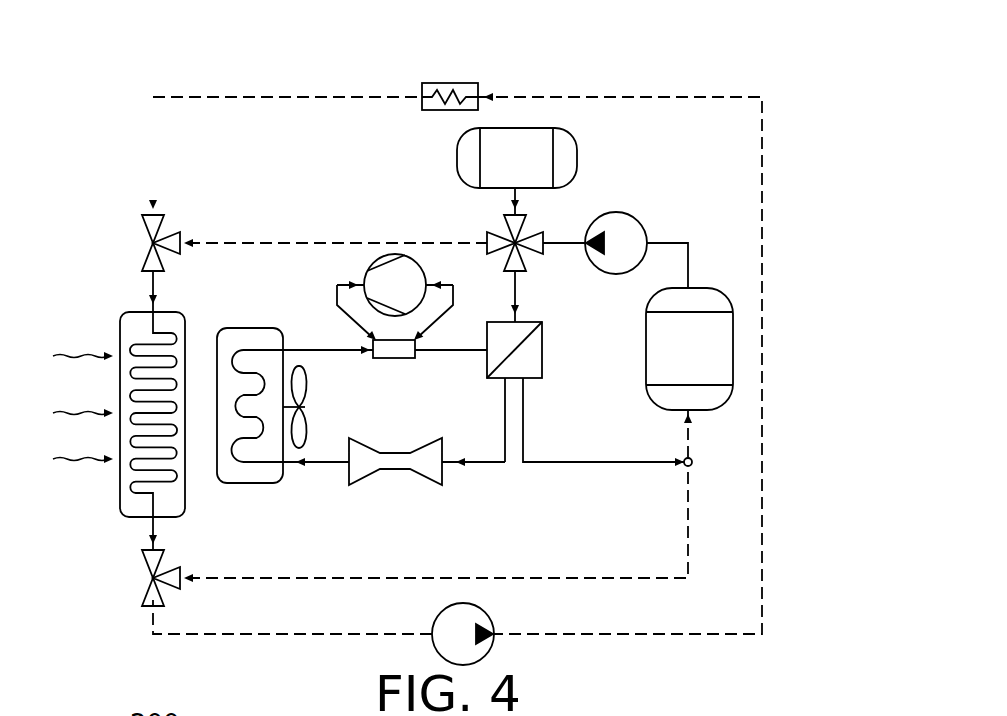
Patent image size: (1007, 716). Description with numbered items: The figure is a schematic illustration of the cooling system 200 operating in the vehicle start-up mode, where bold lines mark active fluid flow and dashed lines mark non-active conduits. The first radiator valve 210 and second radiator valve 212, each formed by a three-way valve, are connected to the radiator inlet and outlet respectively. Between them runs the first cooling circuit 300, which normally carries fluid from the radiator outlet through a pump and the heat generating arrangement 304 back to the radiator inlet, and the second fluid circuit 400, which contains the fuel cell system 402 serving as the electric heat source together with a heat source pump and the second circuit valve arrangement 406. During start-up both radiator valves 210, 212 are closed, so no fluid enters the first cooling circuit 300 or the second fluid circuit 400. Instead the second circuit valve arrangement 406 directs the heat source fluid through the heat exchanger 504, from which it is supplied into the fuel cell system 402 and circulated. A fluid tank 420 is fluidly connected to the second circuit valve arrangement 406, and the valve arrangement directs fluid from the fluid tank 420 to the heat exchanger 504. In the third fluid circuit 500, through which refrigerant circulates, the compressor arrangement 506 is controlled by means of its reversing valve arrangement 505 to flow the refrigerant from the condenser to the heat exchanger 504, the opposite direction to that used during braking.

The cooling system 200 is at (257, 64).
The first radiator valve 210 is at (146, 256).
The second radiator valve 212 is at (146, 591).
The first cooling circuit 300 is at (617, 636).
The heat generating arrangement 304 is at (448, 83).
The second fluid circuit 400 is at (566, 578).
The fuel cell system 402 is at (735, 348).
The second circuit valve arrangement 406 is at (498, 229).
The fluid tank 420 is at (578, 157).
The third fluid circuit 500 is at (472, 462).
The heat exchanger 504 is at (543, 352).
The reversing valve arrangement 505 is at (395, 358).
The compressor arrangement 506 is at (370, 262).